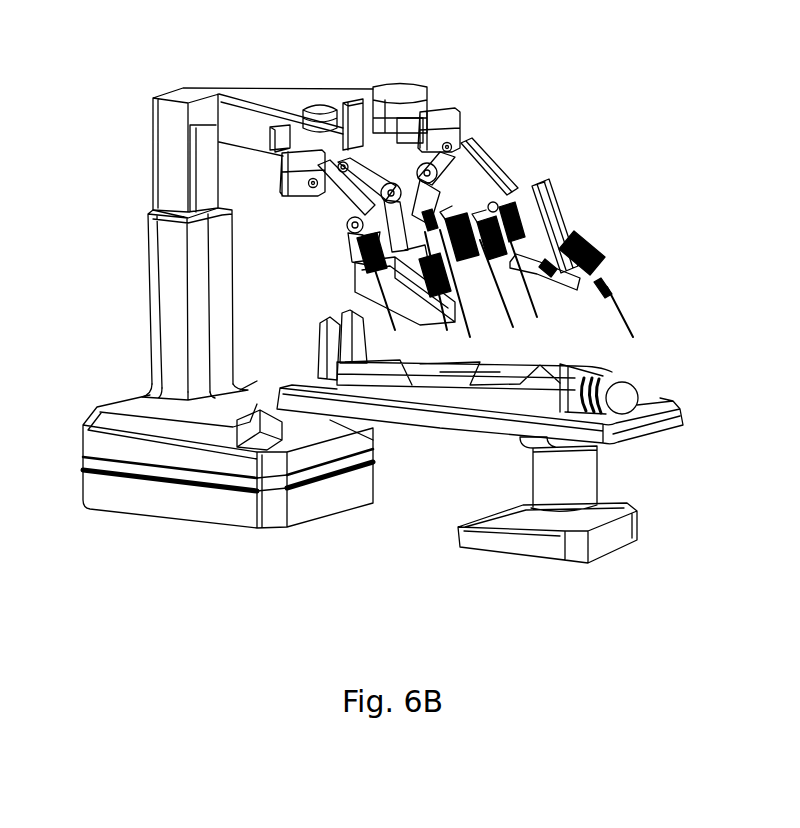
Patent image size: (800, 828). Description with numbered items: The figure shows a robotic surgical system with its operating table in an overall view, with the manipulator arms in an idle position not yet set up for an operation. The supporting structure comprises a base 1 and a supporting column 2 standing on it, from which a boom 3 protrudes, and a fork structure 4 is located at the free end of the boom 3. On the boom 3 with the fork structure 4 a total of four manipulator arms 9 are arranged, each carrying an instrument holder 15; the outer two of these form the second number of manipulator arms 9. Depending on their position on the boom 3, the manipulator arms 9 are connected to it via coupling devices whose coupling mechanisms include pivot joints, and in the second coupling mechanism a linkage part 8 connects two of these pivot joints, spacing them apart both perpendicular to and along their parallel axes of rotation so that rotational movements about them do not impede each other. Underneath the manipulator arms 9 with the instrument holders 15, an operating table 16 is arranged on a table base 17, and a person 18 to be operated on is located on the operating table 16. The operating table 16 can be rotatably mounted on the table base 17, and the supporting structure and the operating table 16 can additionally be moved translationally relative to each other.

The base 1 is at (185, 505).
The supporting column 2 is at (142, 282).
The boom 3 is at (253, 97).
The fork structure 4 is at (352, 97).
The linkage part 8 is at (293, 160).
The manipulator arms 9 is at (500, 172).
The instrument holders 15 is at (593, 247).
The operating table 16 is at (647, 440).
The table base 17 is at (513, 530).
The person 18 is at (613, 388).